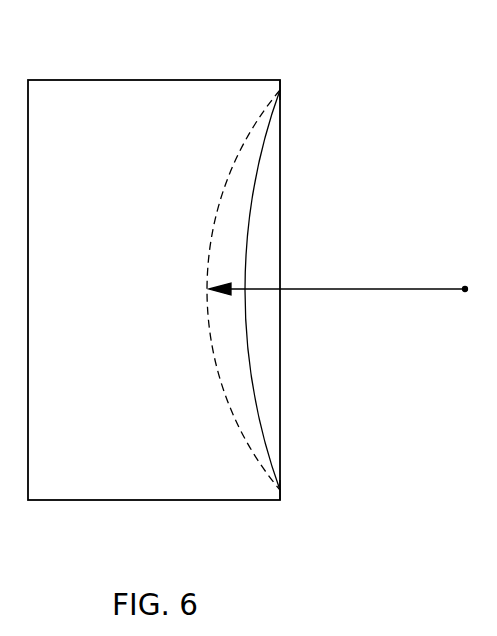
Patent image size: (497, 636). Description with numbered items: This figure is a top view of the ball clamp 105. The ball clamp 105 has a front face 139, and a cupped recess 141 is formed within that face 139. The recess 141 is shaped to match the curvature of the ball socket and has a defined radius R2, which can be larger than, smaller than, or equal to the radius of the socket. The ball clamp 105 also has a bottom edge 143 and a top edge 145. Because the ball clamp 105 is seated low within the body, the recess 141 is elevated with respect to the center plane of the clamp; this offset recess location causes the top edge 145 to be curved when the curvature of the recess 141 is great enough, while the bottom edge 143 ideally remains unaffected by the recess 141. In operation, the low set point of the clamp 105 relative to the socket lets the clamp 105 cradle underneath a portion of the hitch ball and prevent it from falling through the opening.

The ball clamp 105 is at (152, 412).
The front face 139 is at (283, 85).
The cupped recess 141 is at (211, 232).
The bottom edge 143 is at (280, 413).
The top edge 145 is at (257, 165).
The radius of recess R2 is at (416, 289).